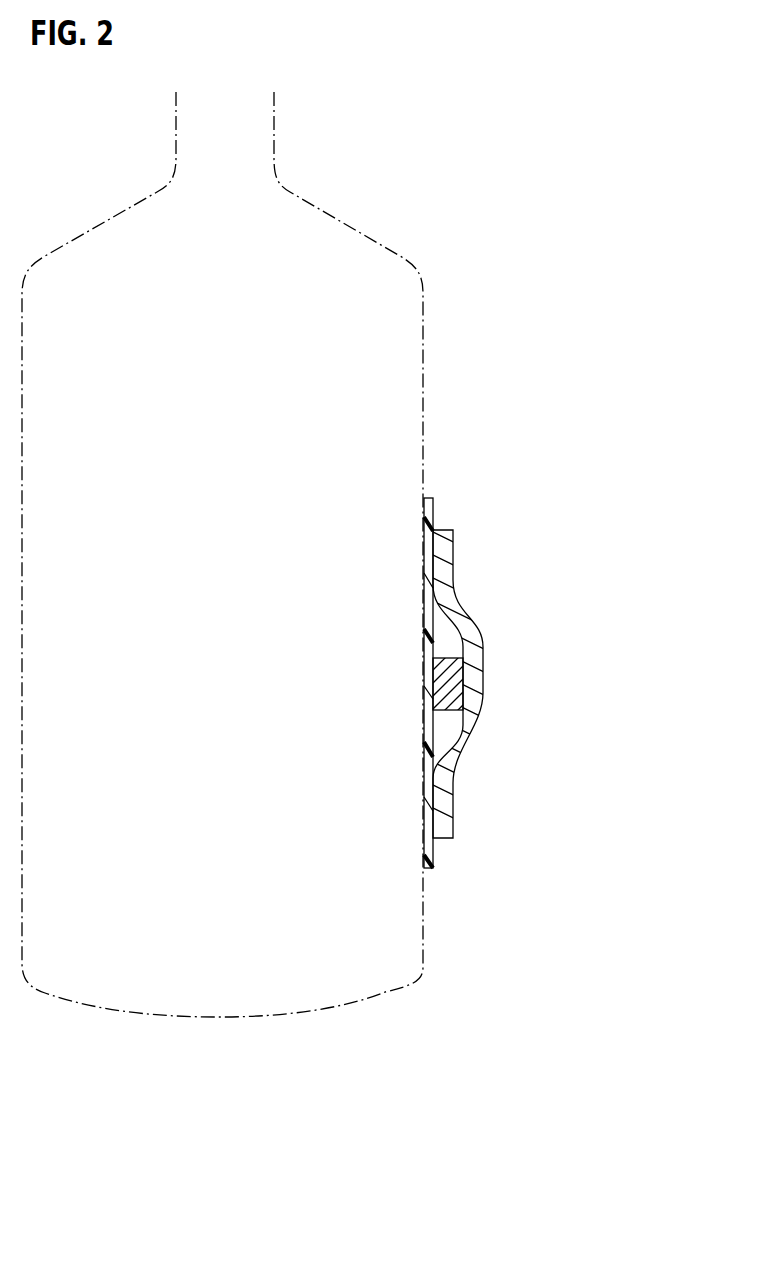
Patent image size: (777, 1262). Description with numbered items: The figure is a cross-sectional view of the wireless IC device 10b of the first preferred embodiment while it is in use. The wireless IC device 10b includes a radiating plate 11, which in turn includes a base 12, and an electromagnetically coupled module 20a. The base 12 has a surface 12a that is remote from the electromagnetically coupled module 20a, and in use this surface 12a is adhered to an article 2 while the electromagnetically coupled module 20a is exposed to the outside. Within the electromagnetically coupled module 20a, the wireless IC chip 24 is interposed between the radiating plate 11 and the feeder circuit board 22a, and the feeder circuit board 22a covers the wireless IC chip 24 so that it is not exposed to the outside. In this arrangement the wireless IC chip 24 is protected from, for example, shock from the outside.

The article 2 is at (348, 224).
The wireless IC device 10b is at (486, 664).
The radiating plate 11 is at (438, 500).
The base 12 is at (437, 852).
The surface 12a is at (424, 722).
The electromagnetically coupled module 20a is at (538, 671).
The feeder circuit board 22a is at (487, 683).
The wireless IC chip 24 is at (472, 745).